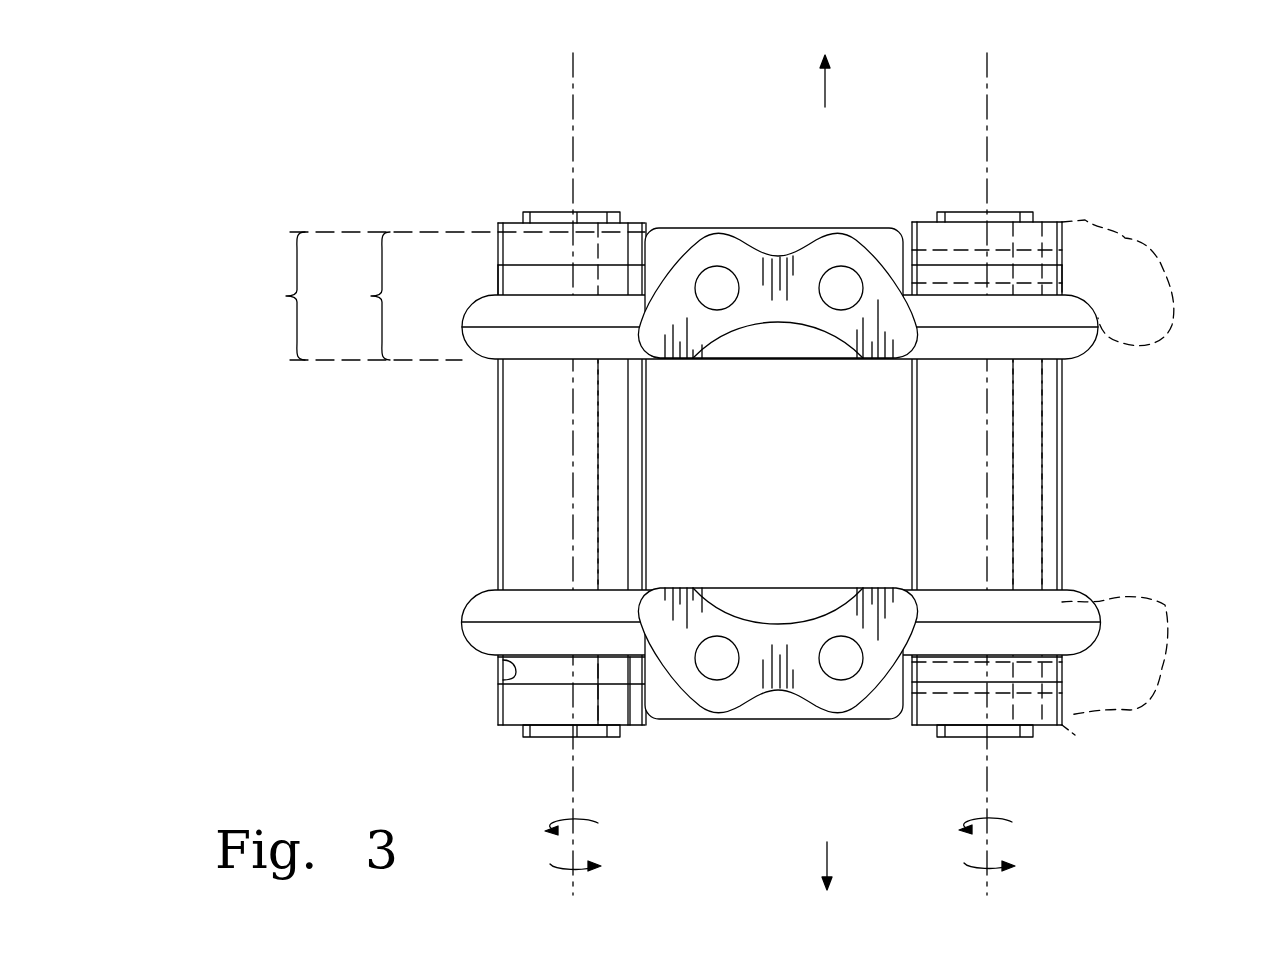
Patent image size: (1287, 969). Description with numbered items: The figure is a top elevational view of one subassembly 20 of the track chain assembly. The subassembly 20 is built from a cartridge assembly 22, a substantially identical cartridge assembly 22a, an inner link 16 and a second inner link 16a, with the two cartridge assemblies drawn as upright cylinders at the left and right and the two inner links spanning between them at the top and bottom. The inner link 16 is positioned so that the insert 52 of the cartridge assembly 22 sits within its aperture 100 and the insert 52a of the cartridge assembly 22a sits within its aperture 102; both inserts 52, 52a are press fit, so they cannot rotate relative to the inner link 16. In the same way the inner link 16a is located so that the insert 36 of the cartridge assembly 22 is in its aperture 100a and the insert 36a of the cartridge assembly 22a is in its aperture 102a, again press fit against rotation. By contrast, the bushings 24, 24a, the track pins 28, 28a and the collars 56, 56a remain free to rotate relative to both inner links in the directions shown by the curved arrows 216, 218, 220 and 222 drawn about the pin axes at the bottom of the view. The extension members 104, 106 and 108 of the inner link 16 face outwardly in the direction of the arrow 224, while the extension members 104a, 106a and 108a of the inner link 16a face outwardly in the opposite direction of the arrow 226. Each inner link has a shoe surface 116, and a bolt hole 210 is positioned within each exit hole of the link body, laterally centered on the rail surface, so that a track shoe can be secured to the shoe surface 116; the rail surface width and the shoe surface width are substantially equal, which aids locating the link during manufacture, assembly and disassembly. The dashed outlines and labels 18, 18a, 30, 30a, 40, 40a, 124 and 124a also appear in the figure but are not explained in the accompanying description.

The inner link 16 is at (474, 312).
The inner link 16a is at (474, 606).
The adjacent track link 18 is at (1080, 215).
The adjacent track link 18a is at (1080, 738).
The subassembly 20 is at (748, 474).
The cartridge assembly 22 is at (1007, 210).
The cartridge assembly 22a is at (538, 212).
The bushing 24 is at (1046, 470).
The bushing 24a is at (506, 462).
The track pin 28 is at (1010, 738).
The track pin 28a is at (548, 738).
The pin axis 30 is at (988, 95).
The pin axis 30a is at (574, 98).
The insert 36 is at (1050, 668).
The insert 36a is at (613, 670).
The bushing 40 is at (980, 727).
The bushing 40a is at (555, 723).
The insert 52 is at (1050, 276).
The insert 52a is at (498, 278).
The collar 56 is at (930, 226).
The collar 56a is at (630, 232).
The aperture 100 is at (966, 365).
The aperture 100a is at (965, 587).
The aperture 102 is at (558, 365).
The aperture 102a is at (512, 672).
The extension member 104 is at (777, 263).
The extension member 104a is at (777, 695).
The extension member 106 is at (703, 212).
The extension member 106a is at (717, 737).
The extension member 108 is at (862, 215).
The extension member 108a is at (866, 737).
The shoe surface 116 is at (712, 347).
The bushing bore 124 is at (962, 208).
The bushing bore 124a is at (960, 742).
The bolt hole 210 is at (712, 280).
The arrow 216 is at (598, 823).
The arrow 218 is at (550, 864).
The arrow 220 is at (1012, 822).
The arrow 222 is at (964, 863).
The arrow 224 is at (827, 95).
The arrow 226 is at (826, 845).